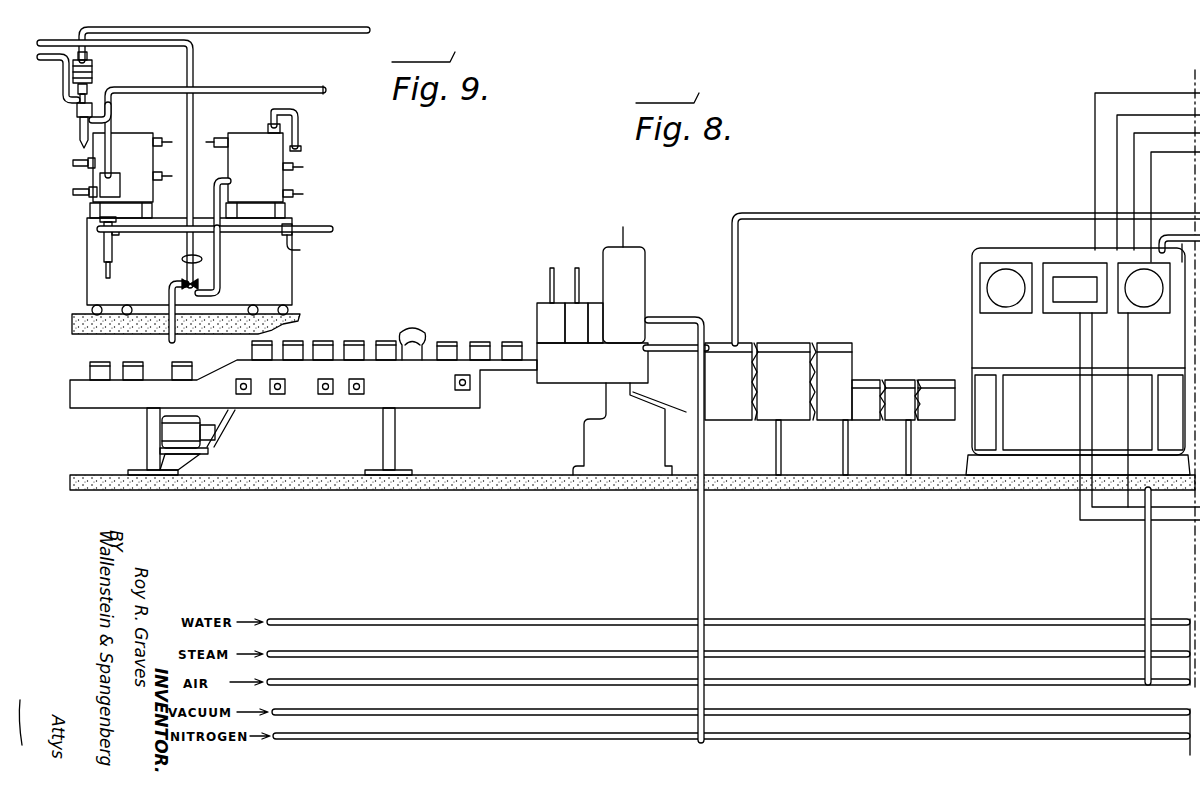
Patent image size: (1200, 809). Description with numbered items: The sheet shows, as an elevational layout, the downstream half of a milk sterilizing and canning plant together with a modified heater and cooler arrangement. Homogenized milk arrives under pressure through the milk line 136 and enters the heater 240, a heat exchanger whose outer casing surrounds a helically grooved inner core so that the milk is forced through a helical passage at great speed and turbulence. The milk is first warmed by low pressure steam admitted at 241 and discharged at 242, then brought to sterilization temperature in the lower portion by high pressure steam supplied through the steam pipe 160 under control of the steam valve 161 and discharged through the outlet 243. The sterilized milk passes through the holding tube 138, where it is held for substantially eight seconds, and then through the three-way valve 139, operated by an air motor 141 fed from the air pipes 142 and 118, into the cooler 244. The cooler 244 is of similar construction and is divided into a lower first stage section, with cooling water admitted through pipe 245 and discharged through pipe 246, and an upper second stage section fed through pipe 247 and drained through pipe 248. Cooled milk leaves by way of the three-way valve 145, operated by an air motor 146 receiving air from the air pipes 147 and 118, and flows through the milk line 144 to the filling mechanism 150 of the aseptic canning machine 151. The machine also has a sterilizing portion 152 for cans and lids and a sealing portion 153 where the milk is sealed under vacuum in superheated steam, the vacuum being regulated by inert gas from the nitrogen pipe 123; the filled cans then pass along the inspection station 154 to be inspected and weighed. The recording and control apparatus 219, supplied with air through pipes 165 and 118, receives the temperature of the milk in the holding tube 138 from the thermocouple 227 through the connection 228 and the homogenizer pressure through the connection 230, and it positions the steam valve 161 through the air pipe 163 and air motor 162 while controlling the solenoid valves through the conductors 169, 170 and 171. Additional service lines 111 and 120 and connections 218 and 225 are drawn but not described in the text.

In FIG. 8, the water supply line 111 is at (352, 625).
In FIG. 8, the air pipe 118 is at (358, 686).
In FIG. 8, the vacuum line 120 is at (366, 716).
In FIG. 8, the nitrogen pipe 123 is at (378, 740).
In FIG. 9, the milk line 136 is at (301, 110).
In FIG. 9, the holding tube 138 is at (241, 233).
In FIG. 9, the three-way valve 139 is at (100, 232).
In FIG. 9, the air motor 141 is at (99, 190).
In FIG. 9, the air pipe 142 is at (136, 92).
In FIG. 9, the milk line 144 is at (58, 97).
In FIG. 8, the milk line 144 is at (926, 213).
In FIG. 9, the three-way valve 145 is at (76, 111).
In FIG. 9, the air motor 146 is at (95, 72).
In FIG. 9, the air pipe 147 is at (290, 34).
In FIG. 8, the filling mechanism 150 is at (750, 344).
In FIG. 8, the aseptic canning machine 151 is at (526, 311).
In FIG. 8, the sterilizing portion 152 is at (843, 346).
In FIG. 8, the sealing portion 153 is at (641, 318).
In FIG. 8, the inspection station 154 is at (349, 410).
In FIG. 9, the steam pipe 160 is at (216, 176).
In FIG. 8, the steam pipe 160 is at (357, 658).
In FIG. 9, the steam valve 161 is at (203, 295).
In FIG. 9, the air motor 162 is at (182, 259).
In FIG. 9, the air pipe 163 is at (154, 46).
In FIG. 8, the air pipe 163 is at (1174, 236).
In FIG. 8, the air pipe 165 is at (1145, 577).
In FIG. 8, the conductor 169 is at (1130, 116).
In FIG. 8, the conductor 170 is at (1157, 153).
In FIG. 8, the conductor 171 is at (1145, 134).
In FIG. 8, the wire 218 is at (1075, 524).
In FIG. 8, the recording and control apparatus 219 is at (1000, 248).
In FIG. 8, the wire 225 is at (1094, 506).
In FIG. 9, the thermocouple 227 is at (310, 238).
In FIG. 9, the thermocouple connection 228 is at (318, 232).
In FIG. 8, the thermocouple connection 228 is at (1130, 467).
In FIG. 8, the pressure gauge connection 230 is at (1131, 93).
In FIG. 9, the heater 240 is at (251, 133).
In FIG. 9, the low pressure steam inlet 241 is at (217, 137).
In FIG. 9, the low pressure steam outlet 242 is at (303, 167).
In FIG. 9, the high pressure steam outlet 243 is at (303, 194).
In FIG. 9, the cooler 244 is at (141, 142).
In FIG. 9, the cooling water inlet pipe 245 is at (73, 193).
In FIG. 9, the cooling water discharge pipe 246 is at (162, 181).
In FIG. 9, the cooling water inlet pipe 247 is at (73, 160).
In FIG. 9, the cooling water discharge pipe 248 is at (162, 145).